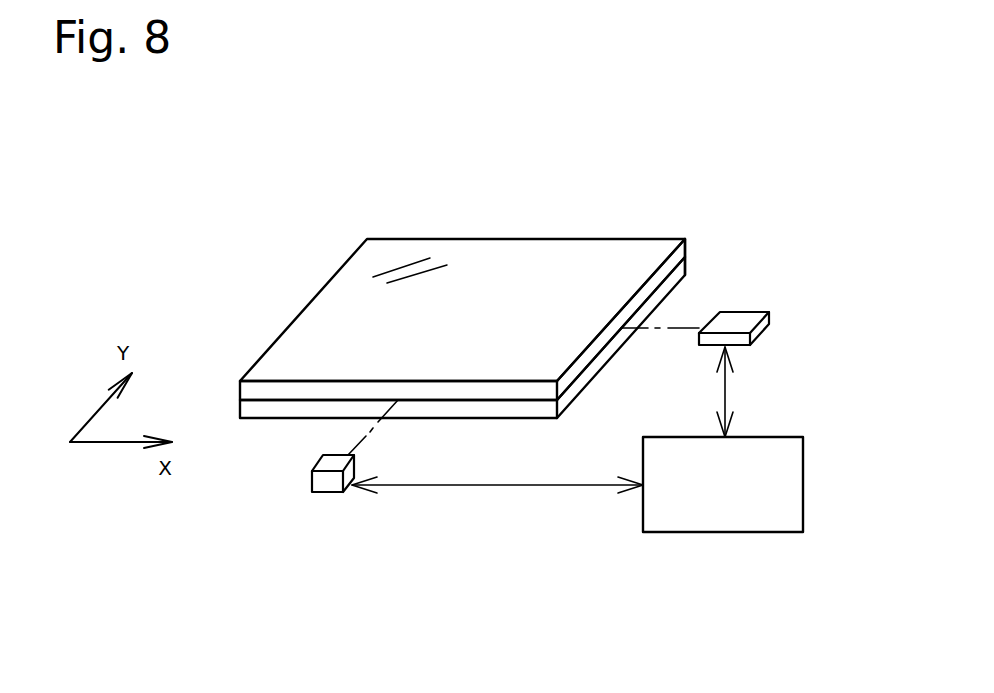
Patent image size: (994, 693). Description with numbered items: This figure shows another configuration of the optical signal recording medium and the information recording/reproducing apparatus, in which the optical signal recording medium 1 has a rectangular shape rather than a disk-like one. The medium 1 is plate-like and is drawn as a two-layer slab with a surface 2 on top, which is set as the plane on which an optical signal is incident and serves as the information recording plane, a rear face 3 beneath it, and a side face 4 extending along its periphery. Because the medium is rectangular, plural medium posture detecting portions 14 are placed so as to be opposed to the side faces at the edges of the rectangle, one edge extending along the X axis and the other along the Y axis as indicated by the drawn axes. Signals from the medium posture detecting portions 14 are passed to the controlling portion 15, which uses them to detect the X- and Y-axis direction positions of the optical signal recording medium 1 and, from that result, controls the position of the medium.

The optical signal recording medium 1 is at (517, 336).
The surface 2 is at (490, 267).
The rear face 3 is at (272, 425).
The side face 4 is at (692, 252).
The medium posture detecting portion 14 is at (783, 313).
The controlling portion 15 is at (726, 532).